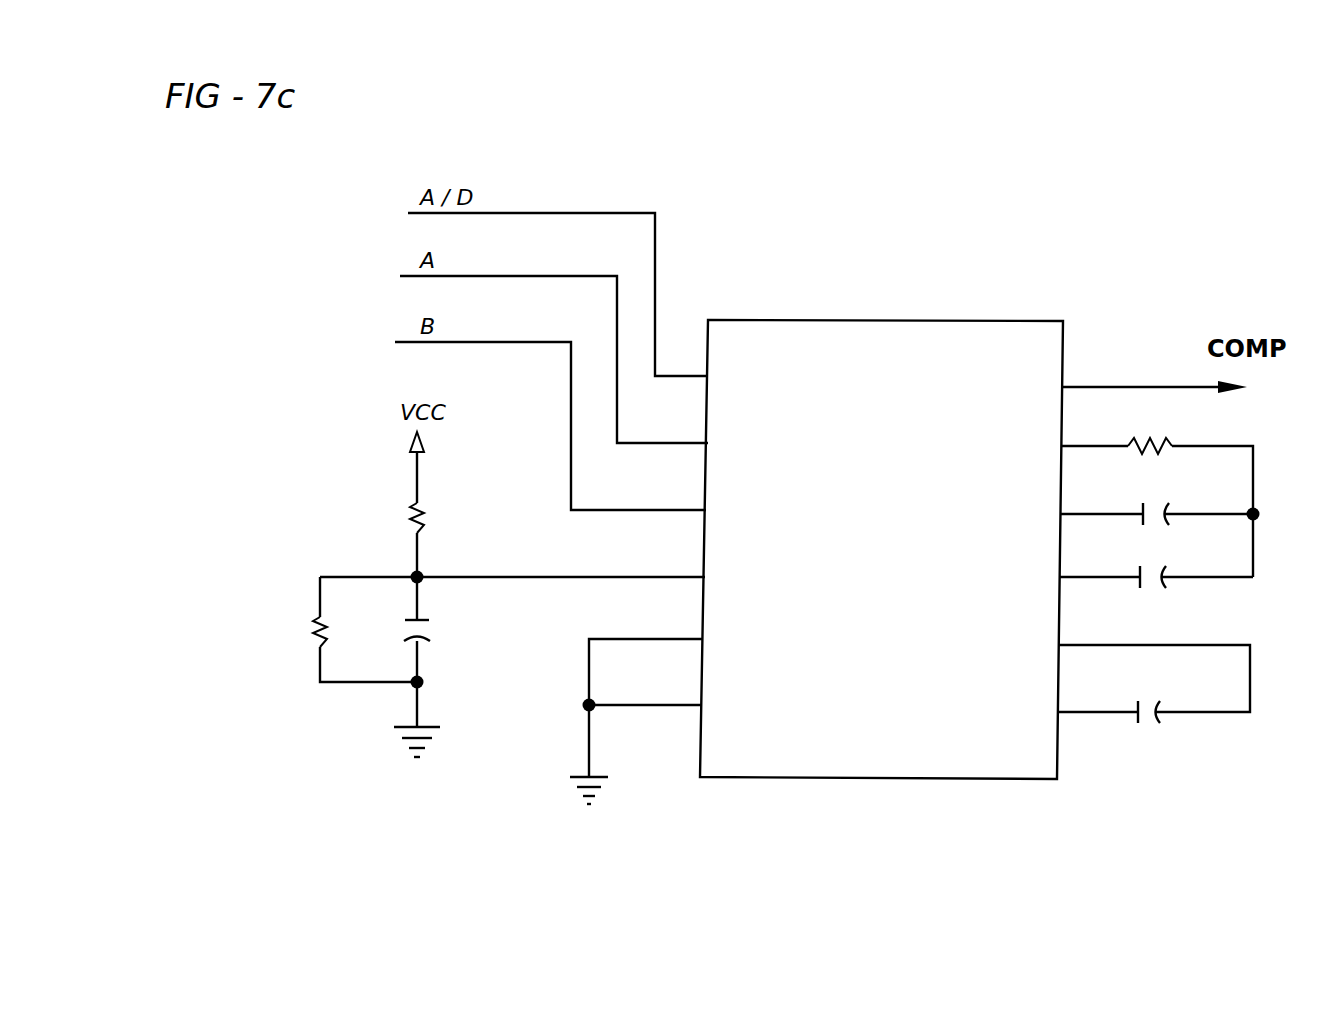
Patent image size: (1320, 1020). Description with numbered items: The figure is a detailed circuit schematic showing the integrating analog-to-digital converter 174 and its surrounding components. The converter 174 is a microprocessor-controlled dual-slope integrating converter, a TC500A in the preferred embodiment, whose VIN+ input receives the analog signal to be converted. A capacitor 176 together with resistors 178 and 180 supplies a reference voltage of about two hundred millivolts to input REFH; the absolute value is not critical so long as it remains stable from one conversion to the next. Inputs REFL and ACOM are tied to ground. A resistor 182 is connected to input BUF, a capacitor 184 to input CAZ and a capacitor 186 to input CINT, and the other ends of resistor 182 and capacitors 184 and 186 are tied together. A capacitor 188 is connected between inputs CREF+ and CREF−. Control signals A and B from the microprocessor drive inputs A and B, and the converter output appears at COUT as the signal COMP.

The integrating analog-to-digital converter 174 is at (995, 780).
The capacitor 176 is at (430, 632).
The resistor 178 is at (318, 627).
The resistor 180 is at (412, 515).
The resistor 182 is at (1168, 450).
The capacitor 184 is at (1164, 500).
The capacitor 186 is at (1162, 566).
The capacitor 188 is at (1156, 704).